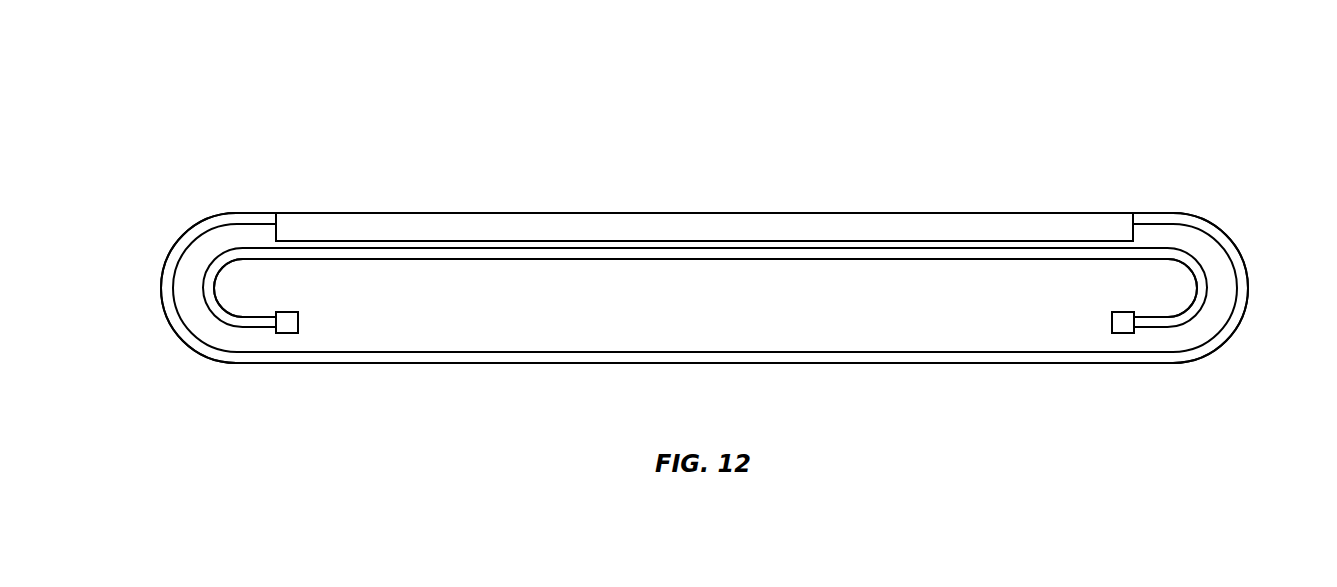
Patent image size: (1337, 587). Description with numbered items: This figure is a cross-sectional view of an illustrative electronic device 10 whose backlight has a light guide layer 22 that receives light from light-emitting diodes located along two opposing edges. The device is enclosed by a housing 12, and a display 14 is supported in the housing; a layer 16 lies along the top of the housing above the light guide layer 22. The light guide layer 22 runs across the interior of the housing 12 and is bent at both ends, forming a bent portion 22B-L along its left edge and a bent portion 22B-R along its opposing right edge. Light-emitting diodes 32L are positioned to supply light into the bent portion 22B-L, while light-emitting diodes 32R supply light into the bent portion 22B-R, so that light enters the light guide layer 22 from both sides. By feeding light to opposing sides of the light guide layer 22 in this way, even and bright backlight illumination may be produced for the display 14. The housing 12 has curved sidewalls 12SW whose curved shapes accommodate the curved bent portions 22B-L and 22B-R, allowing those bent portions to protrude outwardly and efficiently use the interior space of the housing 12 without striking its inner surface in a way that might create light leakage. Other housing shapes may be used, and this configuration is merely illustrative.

The system 10 is at (83, 202).
The housing 12 is at (187, 346).
The curved sidewalls 12SW is at (167, 281).
The display 14 is at (986, 108).
The display 16 is at (634, 226).
The light guide layer 22 is at (672, 257).
The bent portion 22B-L is at (215, 288).
The bent portion 22B-R is at (1197, 285).
The light-emitting diodes 32L is at (289, 330).
The light-emitting diodes 32R is at (1122, 333).